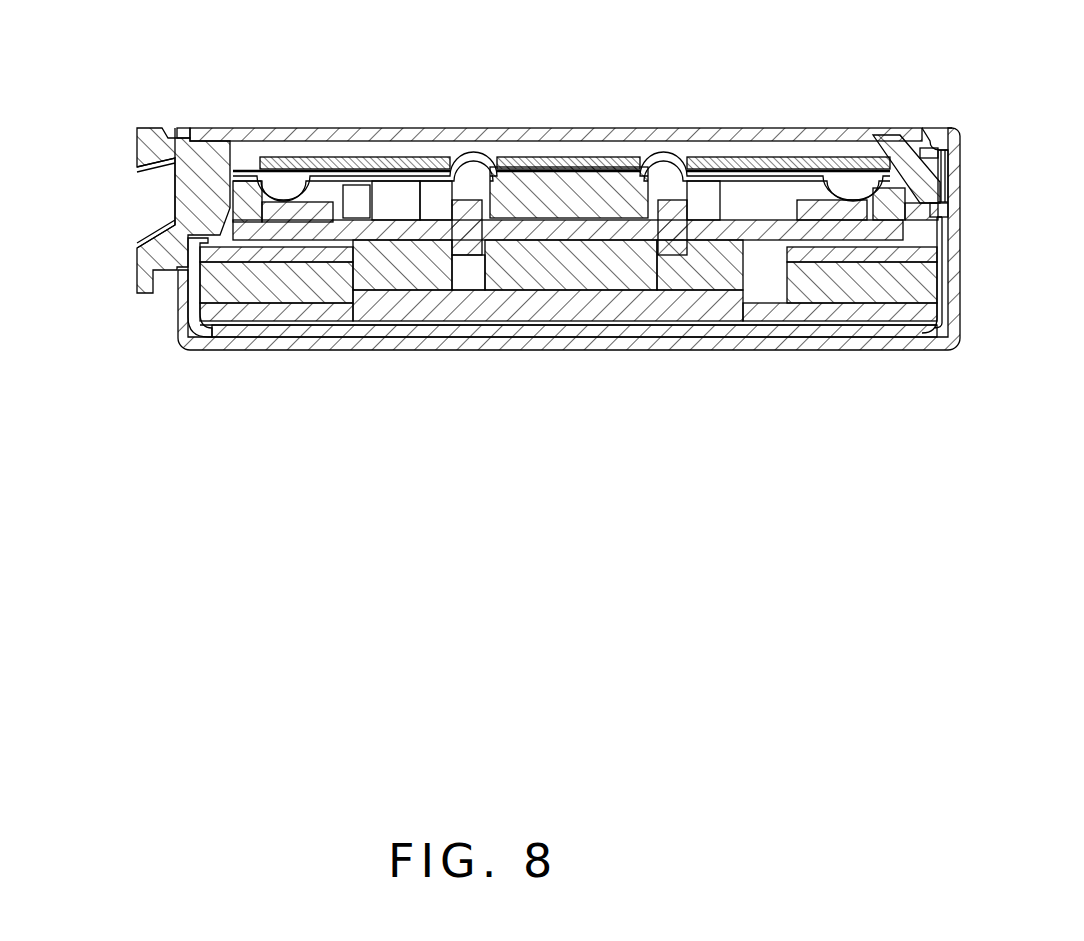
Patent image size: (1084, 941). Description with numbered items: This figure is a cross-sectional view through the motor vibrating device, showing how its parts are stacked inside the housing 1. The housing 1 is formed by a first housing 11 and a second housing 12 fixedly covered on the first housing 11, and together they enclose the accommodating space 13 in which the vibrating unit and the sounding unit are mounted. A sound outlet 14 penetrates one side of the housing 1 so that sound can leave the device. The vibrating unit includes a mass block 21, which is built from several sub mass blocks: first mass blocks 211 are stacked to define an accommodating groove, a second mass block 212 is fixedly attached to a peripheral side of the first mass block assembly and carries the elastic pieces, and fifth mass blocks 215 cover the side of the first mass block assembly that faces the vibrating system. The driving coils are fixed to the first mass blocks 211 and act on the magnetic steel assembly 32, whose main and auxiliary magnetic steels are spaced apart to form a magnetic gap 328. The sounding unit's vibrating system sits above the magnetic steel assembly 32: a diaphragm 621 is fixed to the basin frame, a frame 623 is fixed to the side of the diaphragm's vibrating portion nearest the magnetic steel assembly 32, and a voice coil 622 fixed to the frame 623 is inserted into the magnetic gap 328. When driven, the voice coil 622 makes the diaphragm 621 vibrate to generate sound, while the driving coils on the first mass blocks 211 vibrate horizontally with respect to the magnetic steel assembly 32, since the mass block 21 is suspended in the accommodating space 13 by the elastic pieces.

The housing 1 is at (502, 193).
The first housing 11 is at (187, 345).
The second housing 12 is at (193, 130).
The accommodating space 13 is at (258, 147).
The sound outlet 14 is at (124, 203).
The mass block 21 is at (556, 375).
The first mass block 211 is at (313, 337).
The second mass block 212 is at (260, 337).
The fifth mass block 215 is at (218, 337).
The magnetic steel assembly 32 is at (595, 270).
The magnetic gap 328 is at (472, 280).
The diaphragm 621 is at (338, 167).
The voice coil 622 is at (472, 197).
The frame 623 is at (437, 180).